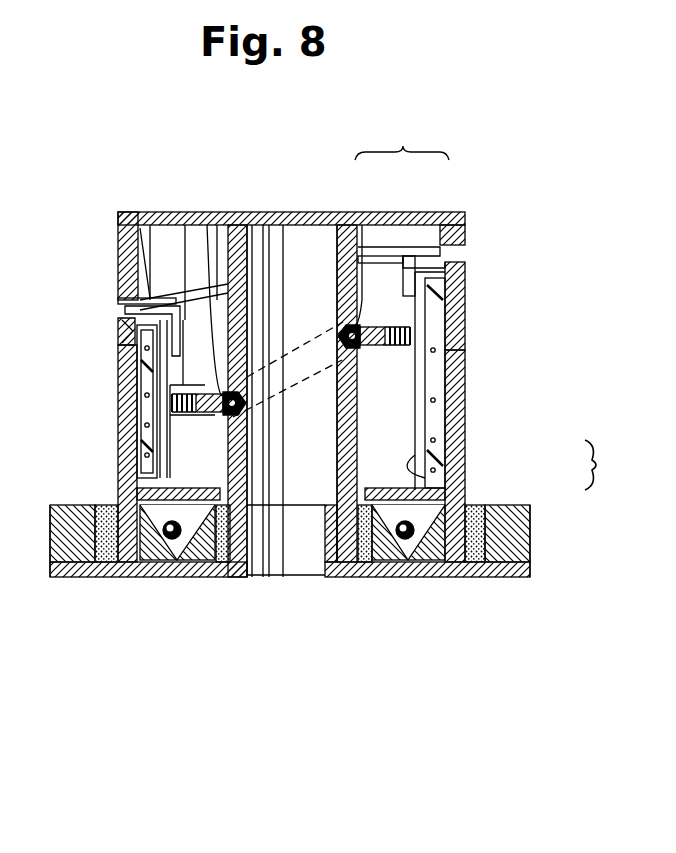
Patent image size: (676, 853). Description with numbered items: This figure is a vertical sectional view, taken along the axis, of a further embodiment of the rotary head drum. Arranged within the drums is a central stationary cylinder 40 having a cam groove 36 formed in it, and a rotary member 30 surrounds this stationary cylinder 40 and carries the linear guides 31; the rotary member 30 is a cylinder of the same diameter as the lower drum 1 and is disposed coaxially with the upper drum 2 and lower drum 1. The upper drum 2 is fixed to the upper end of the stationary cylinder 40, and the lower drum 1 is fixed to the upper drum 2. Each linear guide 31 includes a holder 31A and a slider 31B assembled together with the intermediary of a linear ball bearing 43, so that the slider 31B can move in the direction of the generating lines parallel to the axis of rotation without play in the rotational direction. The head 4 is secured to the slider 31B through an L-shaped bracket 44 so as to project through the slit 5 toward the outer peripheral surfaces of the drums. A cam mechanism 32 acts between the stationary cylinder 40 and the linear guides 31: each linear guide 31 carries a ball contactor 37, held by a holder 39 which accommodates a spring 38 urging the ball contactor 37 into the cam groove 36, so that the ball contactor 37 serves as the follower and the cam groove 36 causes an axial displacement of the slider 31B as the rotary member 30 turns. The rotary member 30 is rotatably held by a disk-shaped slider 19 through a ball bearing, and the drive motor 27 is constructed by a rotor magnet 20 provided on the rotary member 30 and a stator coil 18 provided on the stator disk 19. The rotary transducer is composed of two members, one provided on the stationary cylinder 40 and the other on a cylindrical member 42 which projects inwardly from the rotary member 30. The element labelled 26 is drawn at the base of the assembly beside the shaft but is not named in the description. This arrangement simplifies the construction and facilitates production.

The lower drum 1 is at (118, 330).
The upper drum 2 is at (127, 257).
The head 4 is at (125, 310).
The slit 5 is at (121, 300).
The stator coil 18 is at (75, 578).
The disk-shaped slider 19 is at (140, 578).
The rotor magnet 20 is at (108, 578).
The spring 26 is at (220, 578).
The drive motor 27 is at (177, 620).
The rotary member 30 is at (125, 445).
The linear guide 31 is at (632, 476).
The holder 31A is at (440, 462).
The slider 31B is at (420, 482).
The cam mechanism 32 is at (418, 142).
The cam groove 36 is at (207, 230).
The ball contactor 37 is at (217, 410).
The spring 38 is at (182, 418).
The holder 39 is at (187, 392).
The stationary cylinder 40 is at (236, 228).
The cylindrical member 42 is at (173, 578).
The linear ball bearing 43 is at (140, 388).
The L-shaped bracket 44 is at (150, 298).